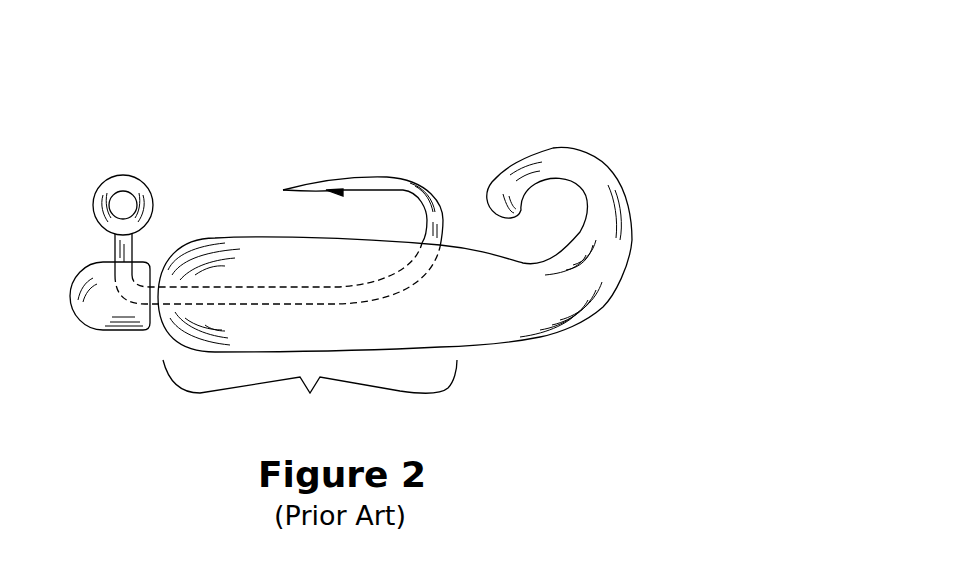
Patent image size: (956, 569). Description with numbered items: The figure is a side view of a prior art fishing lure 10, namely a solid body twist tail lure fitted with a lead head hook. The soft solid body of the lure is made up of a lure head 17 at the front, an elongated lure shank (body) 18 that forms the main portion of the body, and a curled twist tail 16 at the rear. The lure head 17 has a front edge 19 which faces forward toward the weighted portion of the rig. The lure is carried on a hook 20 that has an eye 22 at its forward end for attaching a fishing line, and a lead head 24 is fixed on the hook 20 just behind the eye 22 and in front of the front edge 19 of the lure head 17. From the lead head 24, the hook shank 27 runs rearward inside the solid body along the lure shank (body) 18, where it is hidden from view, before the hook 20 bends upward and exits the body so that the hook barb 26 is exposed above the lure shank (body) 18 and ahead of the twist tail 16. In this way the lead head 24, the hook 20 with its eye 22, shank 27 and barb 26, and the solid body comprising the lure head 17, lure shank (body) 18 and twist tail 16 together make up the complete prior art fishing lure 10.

The fishing lure 10 is at (592, 43).
The twist tail 16 is at (612, 182).
The lure head 17 is at (197, 228).
The lure shank (body) 18 is at (310, 392).
The front edge of the lure head 19 is at (158, 262).
The hook 20 is at (400, 117).
The eye 22 is at (123, 191).
The lead head 24 is at (90, 310).
The hook barb 26 is at (312, 185).
The hook shank 27 is at (398, 297).